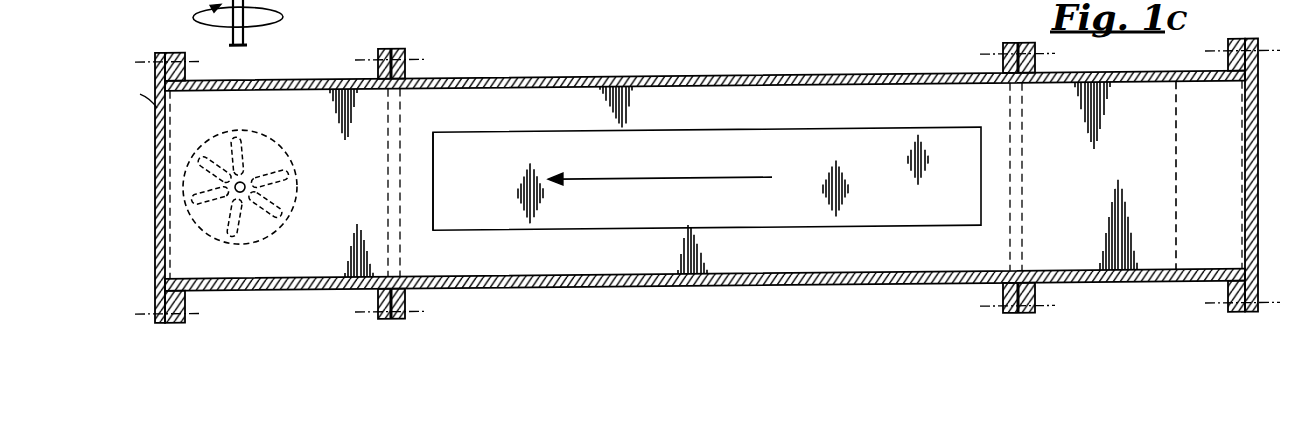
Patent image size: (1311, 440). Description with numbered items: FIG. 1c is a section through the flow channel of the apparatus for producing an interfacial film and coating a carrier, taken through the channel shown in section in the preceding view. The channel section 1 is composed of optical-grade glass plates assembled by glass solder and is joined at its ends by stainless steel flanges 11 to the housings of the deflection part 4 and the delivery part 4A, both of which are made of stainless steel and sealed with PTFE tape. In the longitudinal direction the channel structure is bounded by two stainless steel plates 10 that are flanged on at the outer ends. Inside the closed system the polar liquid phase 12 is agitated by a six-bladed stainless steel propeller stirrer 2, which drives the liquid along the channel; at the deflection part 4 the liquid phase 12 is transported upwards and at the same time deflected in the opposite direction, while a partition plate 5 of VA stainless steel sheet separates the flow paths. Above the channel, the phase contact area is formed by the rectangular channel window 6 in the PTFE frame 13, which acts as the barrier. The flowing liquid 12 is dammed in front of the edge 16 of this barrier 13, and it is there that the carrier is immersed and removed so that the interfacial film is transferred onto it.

The channel section 1 is at (727, 293).
The propeller stirrer 2 is at (297, 187).
The deflection part 4 is at (1120, 294).
The delivery part 4A is at (276, 295).
The partition plate 5 is at (853, 209).
The rectangular channel window 6 is at (800, 137).
The stainless steel plate 10 is at (1290, 132).
The flange 11 is at (380, 52).
The liquid phase 12 is at (710, 181).
The PTFE frame 13 is at (556, 98).
The edge of the barrier 16 is at (442, 177).